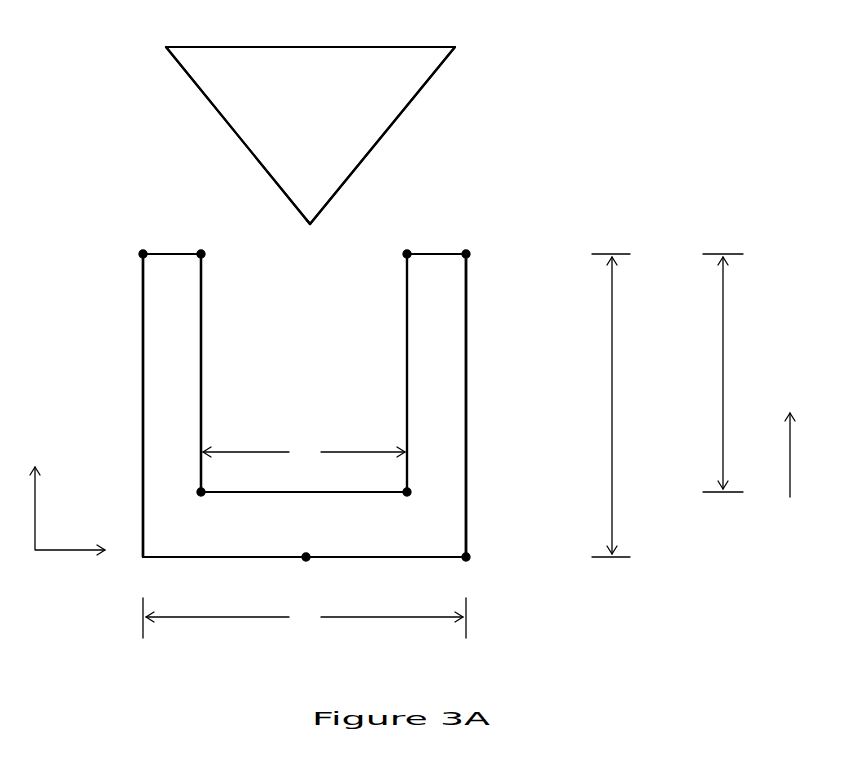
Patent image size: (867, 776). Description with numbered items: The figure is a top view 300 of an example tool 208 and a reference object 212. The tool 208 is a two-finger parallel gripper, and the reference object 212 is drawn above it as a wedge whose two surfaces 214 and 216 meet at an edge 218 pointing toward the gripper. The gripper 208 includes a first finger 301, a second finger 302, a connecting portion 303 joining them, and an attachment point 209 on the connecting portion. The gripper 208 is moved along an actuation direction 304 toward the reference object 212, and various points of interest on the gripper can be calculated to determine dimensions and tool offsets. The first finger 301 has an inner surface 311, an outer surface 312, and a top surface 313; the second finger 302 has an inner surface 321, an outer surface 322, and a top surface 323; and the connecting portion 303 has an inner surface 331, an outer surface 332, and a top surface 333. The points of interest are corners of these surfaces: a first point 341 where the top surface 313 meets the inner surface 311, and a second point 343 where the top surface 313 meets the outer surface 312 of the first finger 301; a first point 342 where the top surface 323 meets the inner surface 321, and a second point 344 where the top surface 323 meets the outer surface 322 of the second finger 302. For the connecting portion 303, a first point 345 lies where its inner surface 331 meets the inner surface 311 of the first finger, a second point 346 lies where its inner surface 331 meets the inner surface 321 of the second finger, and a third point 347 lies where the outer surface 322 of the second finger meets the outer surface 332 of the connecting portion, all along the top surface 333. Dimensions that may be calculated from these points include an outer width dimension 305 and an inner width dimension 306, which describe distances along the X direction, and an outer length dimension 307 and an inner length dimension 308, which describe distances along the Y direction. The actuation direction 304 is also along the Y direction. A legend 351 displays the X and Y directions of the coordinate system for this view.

The reference object 212 is at (425, 112).
The surface 214 is at (268, 177).
The surface 216 is at (352, 175).
The edge 218 is at (311, 226).
The top view 300 is at (304, 361).
The tool 208 is at (137, 307).
The outer surface 312 is at (158, 368).
The first finger 301 is at (165, 405).
The top surface 313 is at (190, 324).
The inner surface 311 is at (202, 398).
The inner surface 321 is at (407, 345).
The outer surface 322 is at (467, 333).
The top surface 323 is at (435, 372).
The second finger 302 is at (448, 408).
The connecting portion 303 is at (448, 505).
The inner surface 331 is at (305, 490).
The top surface 333 is at (332, 542).
The outer surface 332 is at (408, 558).
The second point 343 is at (143, 252).
The first point 341 is at (203, 252).
The first point 342 is at (407, 252).
The second point 344 is at (467, 252).
The first point 345 is at (194, 505).
The second point 346 is at (411, 505).
The attachment point 209 is at (306, 558).
The third point 347 is at (467, 556).
The inner width dimension 306 is at (304, 452).
The outer width dimension 305 is at (304, 618).
The outer length dimension 307 is at (612, 390).
The inner length dimension 308 is at (723, 368).
The actuation direction 304 is at (789, 468).
The legend 351 is at (65, 562).